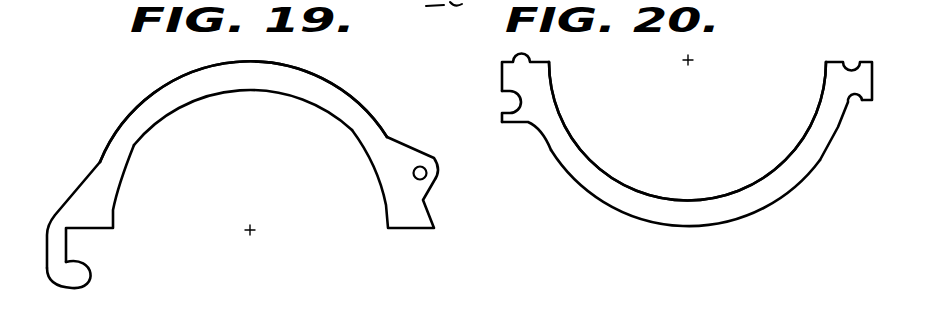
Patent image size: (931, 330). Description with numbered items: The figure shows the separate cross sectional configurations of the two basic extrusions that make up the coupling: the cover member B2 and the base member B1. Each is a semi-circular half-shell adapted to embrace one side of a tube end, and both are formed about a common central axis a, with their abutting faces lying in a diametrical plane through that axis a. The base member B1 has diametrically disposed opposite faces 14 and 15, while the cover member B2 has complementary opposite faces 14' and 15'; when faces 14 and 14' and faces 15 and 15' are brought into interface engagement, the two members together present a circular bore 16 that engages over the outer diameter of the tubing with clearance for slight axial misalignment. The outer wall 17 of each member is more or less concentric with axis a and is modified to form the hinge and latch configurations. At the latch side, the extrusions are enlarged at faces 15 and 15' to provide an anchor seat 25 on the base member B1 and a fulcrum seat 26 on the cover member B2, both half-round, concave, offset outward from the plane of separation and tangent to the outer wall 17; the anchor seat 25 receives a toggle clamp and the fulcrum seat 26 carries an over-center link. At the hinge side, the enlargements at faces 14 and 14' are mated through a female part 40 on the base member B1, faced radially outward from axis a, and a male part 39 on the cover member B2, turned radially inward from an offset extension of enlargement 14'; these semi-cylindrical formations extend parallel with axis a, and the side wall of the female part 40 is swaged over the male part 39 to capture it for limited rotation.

In FIG. 19, the cover member B2 is at (166, 79).
In FIG. 20, the base member B1 is at (823, 58).
In FIG. 19, the circular bore 16 is at (240, 90).
In FIG. 20, the circular bore 16 is at (708, 197).
In FIG. 19, the outer wall 17 is at (364, 107).
In FIG. 20, the outer wall 17 is at (580, 186).
In FIG. 20, the face 14 is at (544, 94).
In FIG. 19, the face 14' is at (91, 206).
In FIG. 20, the face 15 is at (855, 65).
In FIG. 19, the face 15' is at (401, 200).
In FIG. 20, the anchor seat 25 is at (857, 105).
In FIG. 19, the fulcrum seat 26 is at (427, 173).
In FIG. 19, the male part 39 is at (54, 254).
In FIG. 20, the female part 40 is at (512, 82).
In FIG. 19, the central axis a is at (257, 228).
In FIG. 20, the central axis a is at (695, 63).